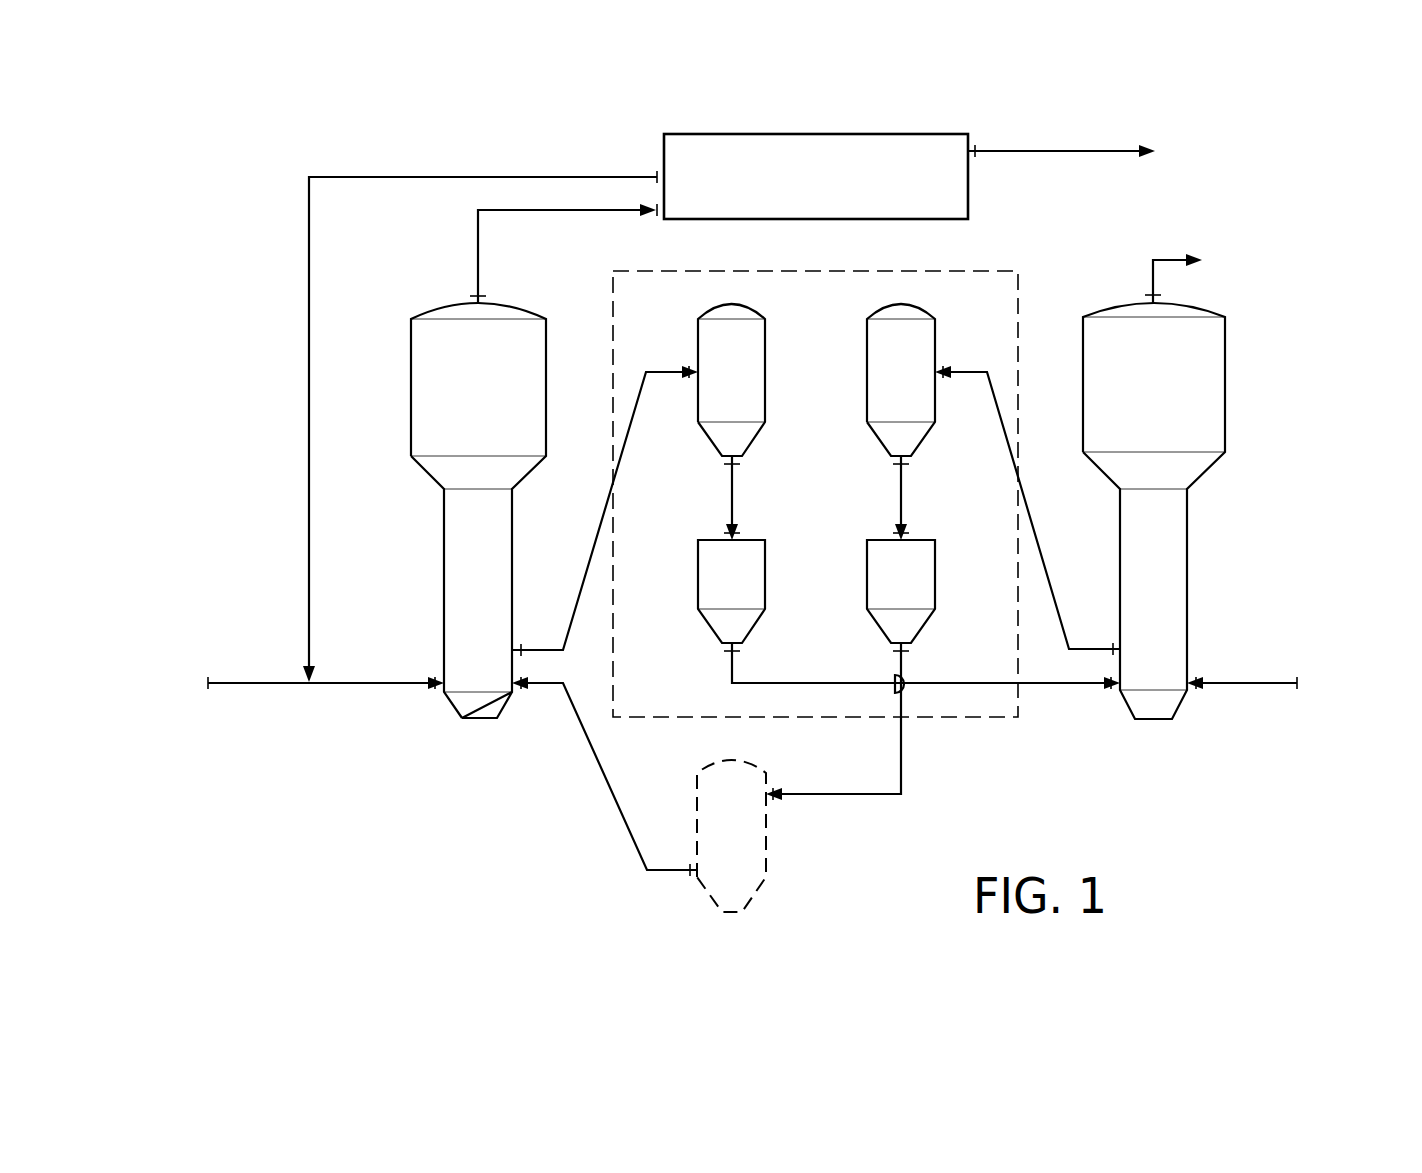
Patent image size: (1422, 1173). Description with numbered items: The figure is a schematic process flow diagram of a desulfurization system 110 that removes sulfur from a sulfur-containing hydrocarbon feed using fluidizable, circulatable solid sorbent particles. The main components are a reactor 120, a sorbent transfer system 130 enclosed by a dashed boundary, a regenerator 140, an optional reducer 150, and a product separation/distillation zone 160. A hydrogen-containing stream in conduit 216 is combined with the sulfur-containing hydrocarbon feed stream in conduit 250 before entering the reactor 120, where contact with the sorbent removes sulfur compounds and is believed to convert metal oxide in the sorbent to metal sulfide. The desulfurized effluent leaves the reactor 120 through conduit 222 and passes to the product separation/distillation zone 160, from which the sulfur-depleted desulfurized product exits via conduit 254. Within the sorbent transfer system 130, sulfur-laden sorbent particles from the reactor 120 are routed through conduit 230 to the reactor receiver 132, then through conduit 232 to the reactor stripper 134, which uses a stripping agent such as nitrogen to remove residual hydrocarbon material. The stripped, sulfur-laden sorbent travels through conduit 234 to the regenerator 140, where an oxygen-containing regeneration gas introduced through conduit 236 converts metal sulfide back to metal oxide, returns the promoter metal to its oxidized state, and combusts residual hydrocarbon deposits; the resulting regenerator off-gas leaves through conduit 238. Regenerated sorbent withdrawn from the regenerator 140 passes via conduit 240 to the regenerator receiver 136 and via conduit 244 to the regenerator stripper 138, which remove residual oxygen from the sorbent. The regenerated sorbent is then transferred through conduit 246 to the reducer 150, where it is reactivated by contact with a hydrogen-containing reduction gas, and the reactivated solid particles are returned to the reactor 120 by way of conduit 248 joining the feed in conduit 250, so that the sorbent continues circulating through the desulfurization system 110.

The desulfurization system 110 is at (172, 184).
The reactor 120 is at (411, 337).
The sorbent transfer system 130 is at (1020, 283).
The reactor receiver 132 is at (766, 333).
The reactor stripper 134 is at (766, 571).
The regenerator receiver 136 is at (936, 333).
The regenerator stripper 138 is at (936, 571).
The regenerator 140 is at (1226, 335).
The reducer 150 is at (767, 860).
The product separation/distillation zone 160 is at (969, 205).
The conduit 216 is at (310, 497).
The conduit 222 is at (478, 254).
The conduit 230 is at (603, 523).
The conduit 232 is at (733, 487).
The conduit 234 is at (790, 682).
The conduit 236 is at (1258, 685).
The conduit 238 is at (1153, 248).
The conduit 240 is at (1034, 523).
The conduit 244 is at (902, 487).
The conduit 246 is at (903, 758).
The reduced sorbent return line 248 is at (600, 760).
The conduit 250 is at (260, 684).
The conduit 254 is at (998, 153).